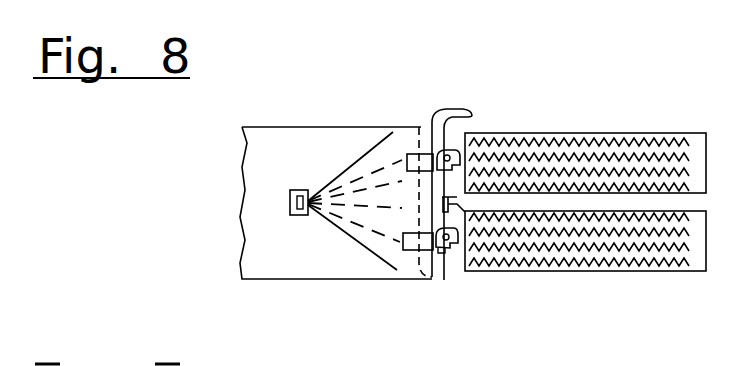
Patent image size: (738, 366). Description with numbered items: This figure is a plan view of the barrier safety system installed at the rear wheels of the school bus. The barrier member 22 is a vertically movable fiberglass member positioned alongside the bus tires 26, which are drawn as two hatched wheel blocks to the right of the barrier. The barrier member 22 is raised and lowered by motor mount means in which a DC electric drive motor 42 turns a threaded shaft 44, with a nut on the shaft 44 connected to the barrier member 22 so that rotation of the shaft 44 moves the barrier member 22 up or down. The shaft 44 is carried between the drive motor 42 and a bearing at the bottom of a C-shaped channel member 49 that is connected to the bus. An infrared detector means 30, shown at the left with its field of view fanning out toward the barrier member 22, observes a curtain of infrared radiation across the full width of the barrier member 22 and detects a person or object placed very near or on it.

The barrier member 22 is at (438, 125).
The tires 26 is at (598, 262).
The infrared detector means 30 is at (290, 215).
The DC electric drive motor 42 is at (413, 155).
The threaded shaft 44 is at (447, 241).
The C-shaped channel member 49 is at (458, 207).